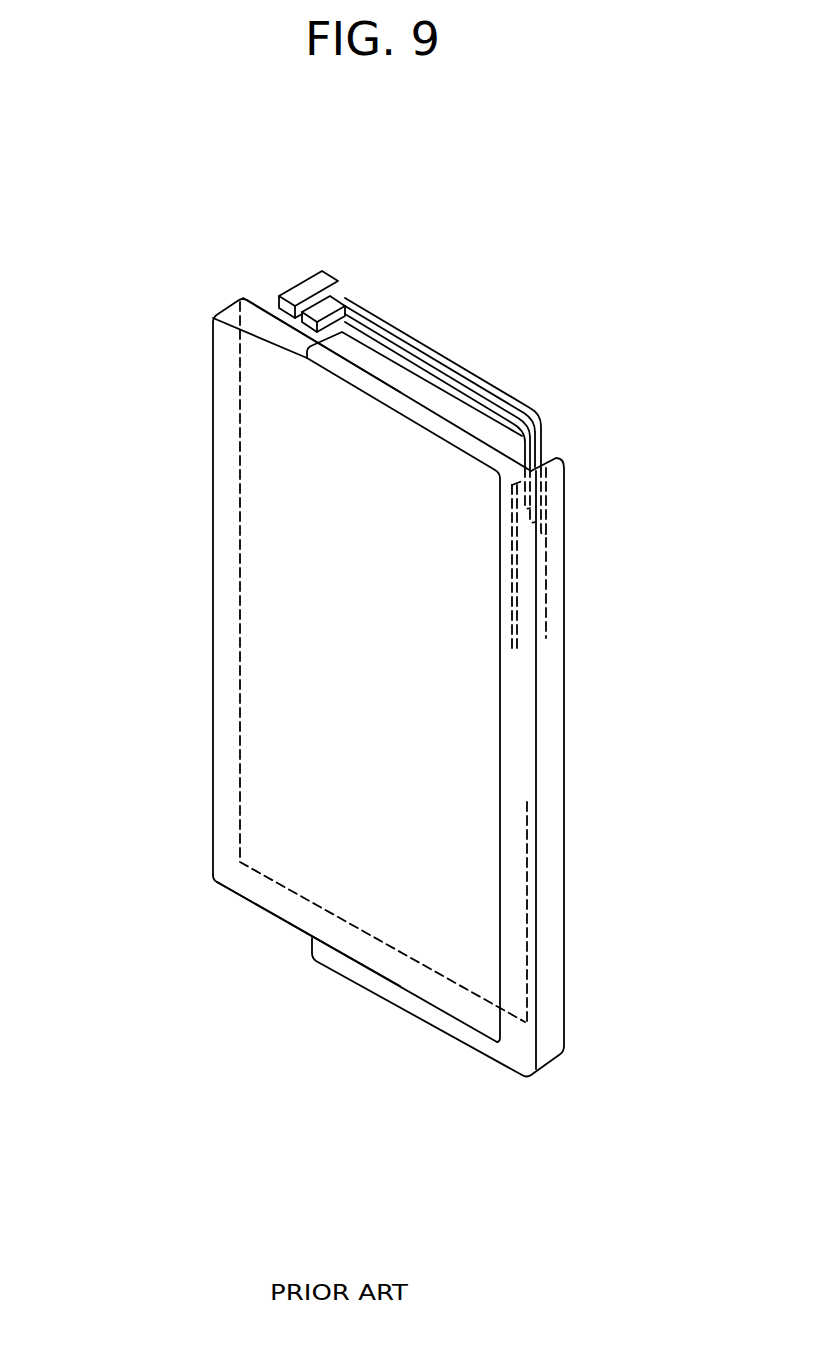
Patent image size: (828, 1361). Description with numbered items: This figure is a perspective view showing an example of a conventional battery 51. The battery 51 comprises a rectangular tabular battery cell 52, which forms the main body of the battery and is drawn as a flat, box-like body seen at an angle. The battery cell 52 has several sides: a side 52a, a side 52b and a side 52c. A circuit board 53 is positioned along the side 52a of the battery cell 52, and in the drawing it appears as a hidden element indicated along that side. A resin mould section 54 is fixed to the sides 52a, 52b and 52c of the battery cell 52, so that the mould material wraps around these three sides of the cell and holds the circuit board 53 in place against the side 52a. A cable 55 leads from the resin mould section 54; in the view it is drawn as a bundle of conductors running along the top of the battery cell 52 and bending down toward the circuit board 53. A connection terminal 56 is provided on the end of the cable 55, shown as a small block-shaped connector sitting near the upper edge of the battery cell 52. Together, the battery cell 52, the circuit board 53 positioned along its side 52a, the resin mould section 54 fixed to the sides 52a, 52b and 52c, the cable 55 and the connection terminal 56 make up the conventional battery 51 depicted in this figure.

The battery 51 is at (468, 301).
The battery cell 52 is at (222, 665).
The side of the battery cell 52a is at (513, 948).
The side of the battery cell 52b is at (262, 313).
The side of the battery cell 52c is at (262, 890).
The circuit board 53 is at (527, 590).
The resin mould section 54 is at (549, 808).
The cable 55 is at (500, 391).
The connection terminal 56 is at (312, 280).